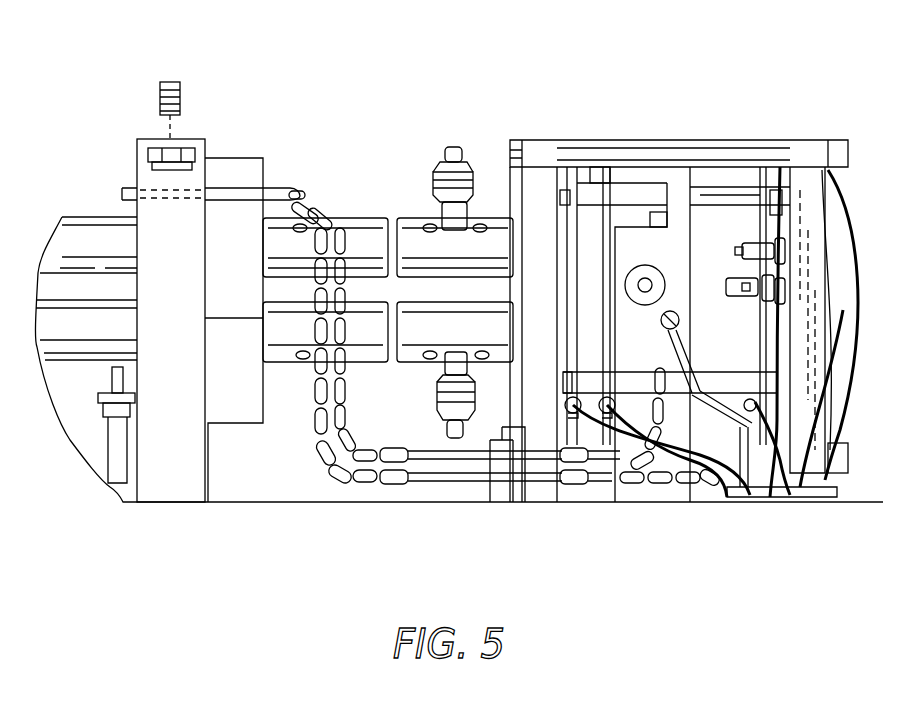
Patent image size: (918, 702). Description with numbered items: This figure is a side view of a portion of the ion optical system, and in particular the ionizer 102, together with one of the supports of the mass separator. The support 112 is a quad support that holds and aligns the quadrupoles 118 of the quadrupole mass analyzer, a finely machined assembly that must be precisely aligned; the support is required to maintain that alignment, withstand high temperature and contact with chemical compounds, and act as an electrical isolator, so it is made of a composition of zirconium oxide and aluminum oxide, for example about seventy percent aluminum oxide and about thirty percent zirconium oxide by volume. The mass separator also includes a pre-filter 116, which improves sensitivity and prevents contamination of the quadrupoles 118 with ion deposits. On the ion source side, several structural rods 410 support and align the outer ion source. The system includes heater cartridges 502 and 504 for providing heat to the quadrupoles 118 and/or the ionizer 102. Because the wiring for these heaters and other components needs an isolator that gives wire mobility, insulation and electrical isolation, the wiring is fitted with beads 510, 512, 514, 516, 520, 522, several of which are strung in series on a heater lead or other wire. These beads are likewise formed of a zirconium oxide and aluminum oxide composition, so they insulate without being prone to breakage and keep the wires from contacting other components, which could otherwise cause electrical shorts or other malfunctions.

The ionizer 102 is at (668, 140).
The support 112 is at (227, 143).
The pre-filter 116 is at (417, 217).
The quadrupoles 118 is at (122, 217).
The structural rods 410 is at (718, 197).
The heater cartridge 502 is at (277, 192).
The heater cartridge 504 is at (657, 353).
The bead 510 is at (315, 383).
The bead 512 is at (360, 457).
The bead 514 is at (595, 480).
The bead 516 is at (637, 480).
The bead 520 is at (745, 470).
The bead 522 is at (767, 480).